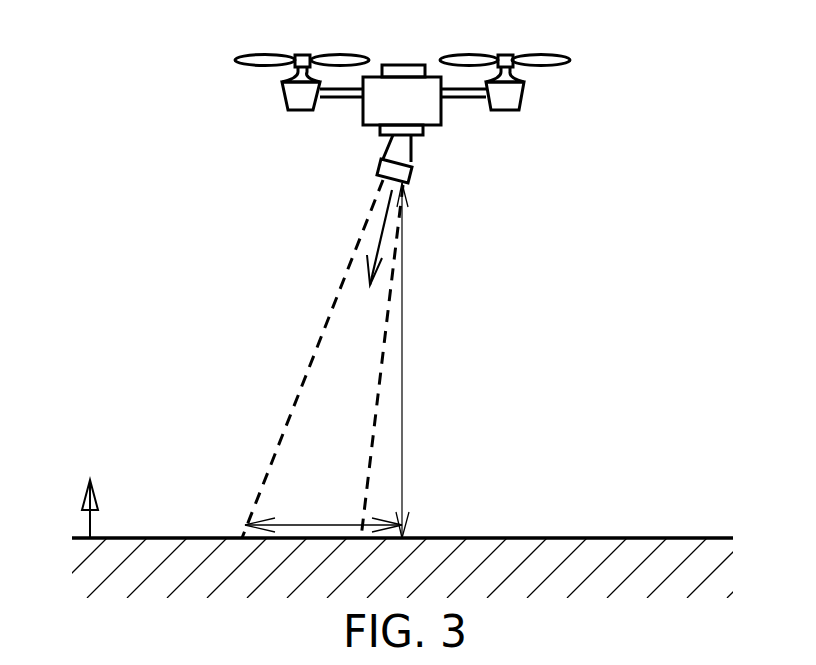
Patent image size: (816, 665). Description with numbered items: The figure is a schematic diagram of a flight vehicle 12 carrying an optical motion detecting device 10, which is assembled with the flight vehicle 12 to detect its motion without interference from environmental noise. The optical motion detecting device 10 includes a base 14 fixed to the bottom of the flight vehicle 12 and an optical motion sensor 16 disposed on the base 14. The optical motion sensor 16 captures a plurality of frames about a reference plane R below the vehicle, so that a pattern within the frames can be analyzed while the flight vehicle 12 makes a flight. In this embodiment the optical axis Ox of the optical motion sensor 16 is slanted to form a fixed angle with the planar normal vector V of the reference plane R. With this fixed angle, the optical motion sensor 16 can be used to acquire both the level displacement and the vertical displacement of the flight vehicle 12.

The optical motion detecting device 10 is at (425, 110).
The flight vehicle 12 is at (402, 90).
The base 14 is at (418, 132).
The optical motion sensor 16 is at (412, 172).
The reference plane R is at (690, 538).
The planar normal vector V is at (80, 509).
The optical axis Ox is at (353, 237).